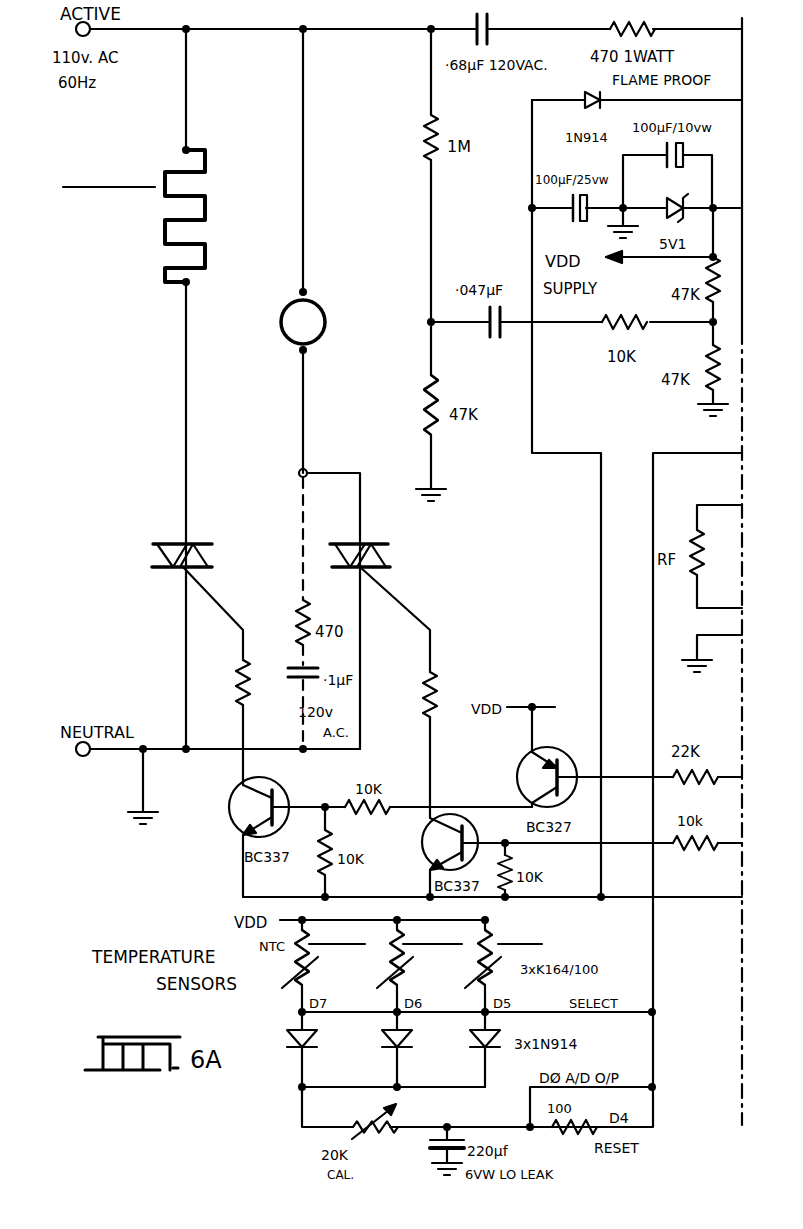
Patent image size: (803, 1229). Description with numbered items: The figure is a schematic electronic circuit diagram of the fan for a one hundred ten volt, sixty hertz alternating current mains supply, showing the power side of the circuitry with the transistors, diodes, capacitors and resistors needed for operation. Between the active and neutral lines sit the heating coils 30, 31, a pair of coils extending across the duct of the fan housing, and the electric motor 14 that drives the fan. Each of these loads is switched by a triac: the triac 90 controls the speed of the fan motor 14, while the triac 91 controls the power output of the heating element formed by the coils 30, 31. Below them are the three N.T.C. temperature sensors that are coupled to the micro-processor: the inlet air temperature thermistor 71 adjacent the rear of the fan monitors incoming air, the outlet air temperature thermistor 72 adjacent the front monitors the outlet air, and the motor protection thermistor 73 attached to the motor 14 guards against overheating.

The electric motor 14 is at (291, 343).
The heating coil 30 is at (134, 286).
The heating coil 31 is at (160, 218).
The inlet air temperature thermistor 71 is at (475, 977).
The outlet air temperature thermistor 72 is at (385, 980).
The motor protection thermistor 73 is at (292, 990).
The triac 90 is at (393, 569).
The triac 91 is at (158, 570).